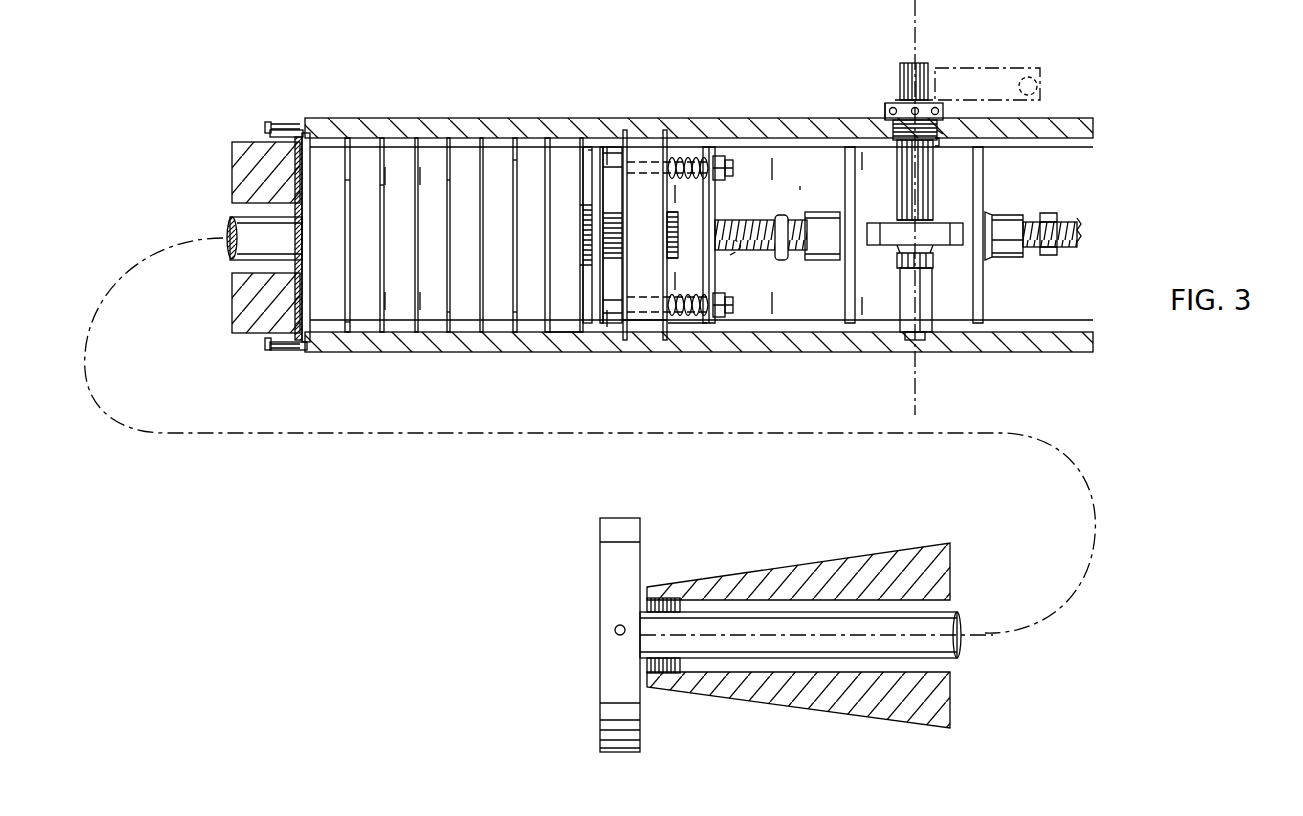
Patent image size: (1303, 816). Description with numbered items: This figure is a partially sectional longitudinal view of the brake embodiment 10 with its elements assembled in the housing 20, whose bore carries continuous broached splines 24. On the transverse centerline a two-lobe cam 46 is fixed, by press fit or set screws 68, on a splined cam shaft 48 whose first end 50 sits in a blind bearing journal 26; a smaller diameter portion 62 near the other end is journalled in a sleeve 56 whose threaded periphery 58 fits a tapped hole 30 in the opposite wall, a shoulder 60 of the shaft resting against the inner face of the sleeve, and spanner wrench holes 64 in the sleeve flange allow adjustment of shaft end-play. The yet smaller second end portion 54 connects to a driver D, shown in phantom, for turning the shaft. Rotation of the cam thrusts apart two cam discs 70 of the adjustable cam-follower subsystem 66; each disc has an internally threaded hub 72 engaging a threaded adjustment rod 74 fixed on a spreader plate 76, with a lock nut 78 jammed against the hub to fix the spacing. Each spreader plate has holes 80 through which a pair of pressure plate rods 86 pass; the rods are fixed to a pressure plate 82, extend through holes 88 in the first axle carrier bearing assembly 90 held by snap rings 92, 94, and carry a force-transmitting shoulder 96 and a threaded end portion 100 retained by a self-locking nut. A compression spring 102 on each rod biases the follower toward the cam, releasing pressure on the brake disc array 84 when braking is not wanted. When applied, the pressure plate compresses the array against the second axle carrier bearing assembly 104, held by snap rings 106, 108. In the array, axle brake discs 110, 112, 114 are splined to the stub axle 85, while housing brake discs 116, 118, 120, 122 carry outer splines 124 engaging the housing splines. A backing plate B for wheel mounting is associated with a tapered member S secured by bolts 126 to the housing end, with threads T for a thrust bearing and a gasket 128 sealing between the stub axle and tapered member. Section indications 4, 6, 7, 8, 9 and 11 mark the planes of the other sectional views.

The embodiment 10 is at (387, 175).
The housing 20 is at (1067, 116).
The splines 24 is at (605, 325).
The bearing journal 26 is at (922, 343).
The tapped hole 30 is at (945, 128).
The cam 46 is at (897, 220).
The cam shaft 48 is at (897, 185).
The first end 50 is at (912, 340).
The second end portion 54 is at (926, 64).
The sleeve 56 is at (903, 103).
The threaded periphery 58 is at (933, 140).
The shoulder 60 is at (886, 114).
The smaller diameter portion 62 is at (937, 110).
The spanner wrench holes 64 is at (890, 108).
The cam-follower subsystem 66 is at (800, 186).
The set screws 68 is at (931, 226).
The cam discs 70 is at (852, 265).
The hub 72 is at (820, 252).
The threaded adjustment rod 74 is at (808, 222).
The spreader plate 76 is at (714, 272).
The lock nut 78 is at (780, 214).
The holes 80 is at (735, 255).
The pressure plate 82 is at (596, 150).
The brake disc array 84 is at (571, 366).
The stub axle 85 is at (680, 222).
The pressure plate rods 86 is at (735, 305).
The hole 88 is at (662, 300).
The first axle carrier bearing assembly 90 is at (652, 322).
The snap ring 92 is at (670, 140).
The snap ring 94 is at (636, 140).
The shoulder 96 is at (693, 270).
The threaded end portion 100 is at (727, 300).
The compression spring 102 is at (690, 322).
The second axle carrier bearing assembly 104 is at (304, 340).
The snap ring 106 is at (322, 148).
The snap ring 108 is at (348, 180).
The axle brake disc 110 is at (382, 185).
The axle brake disc 112 is at (467, 312).
The axle brake disc 114 is at (527, 312).
The housing brake disc 116 is at (362, 322).
The housing brake disc 118 is at (445, 180).
The housing brake disc 120 is at (505, 160).
The housing brake disc 122 is at (565, 160).
The splines 124 is at (592, 150).
The bolts 126 is at (282, 348).
The gasket 128 is at (298, 214).
The section line 4- 4 is at (1035, 305).
The section line 6- 6 is at (864, 160).
The section line 7- 7 is at (774, 170).
The section line 8- 8 is at (677, 193).
The section line 9- 9 is at (609, 155).
The section line 11- 11 is at (422, 175).
The driver D is at (1030, 60).
The tapered member S is at (240, 332).
The backing plate B is at (600, 568).
The threads T is at (652, 600).